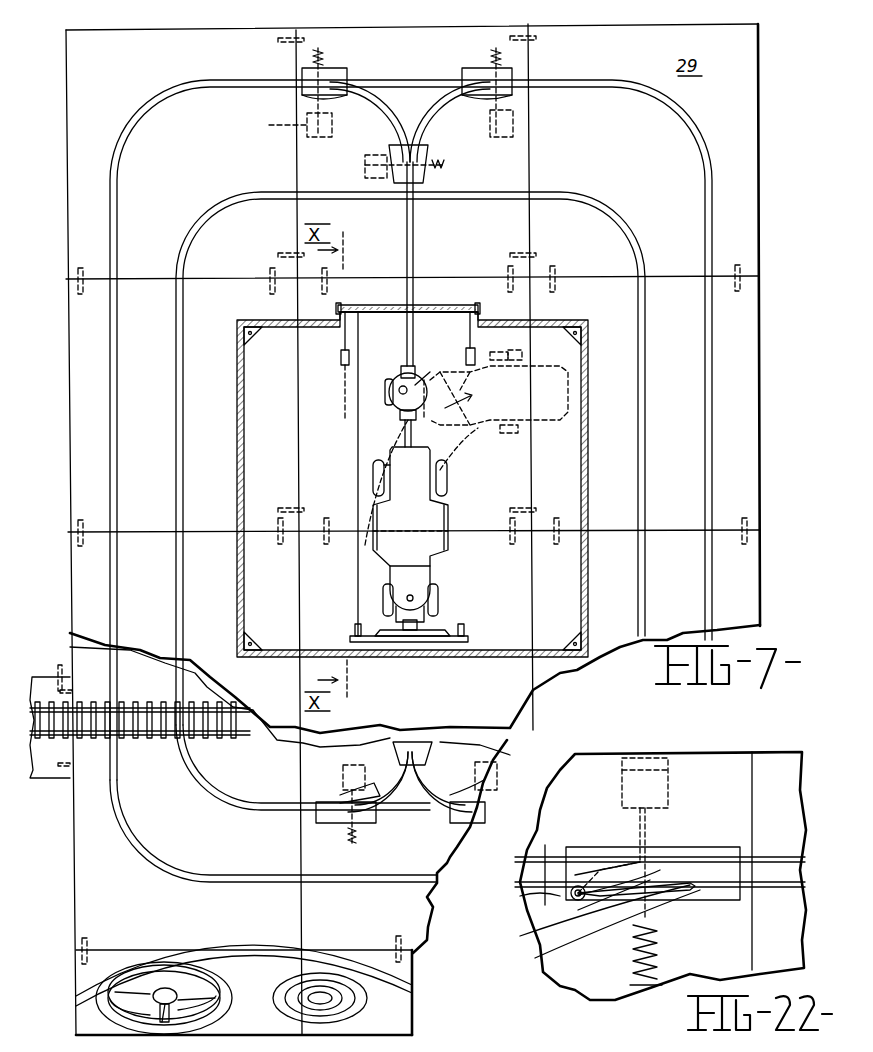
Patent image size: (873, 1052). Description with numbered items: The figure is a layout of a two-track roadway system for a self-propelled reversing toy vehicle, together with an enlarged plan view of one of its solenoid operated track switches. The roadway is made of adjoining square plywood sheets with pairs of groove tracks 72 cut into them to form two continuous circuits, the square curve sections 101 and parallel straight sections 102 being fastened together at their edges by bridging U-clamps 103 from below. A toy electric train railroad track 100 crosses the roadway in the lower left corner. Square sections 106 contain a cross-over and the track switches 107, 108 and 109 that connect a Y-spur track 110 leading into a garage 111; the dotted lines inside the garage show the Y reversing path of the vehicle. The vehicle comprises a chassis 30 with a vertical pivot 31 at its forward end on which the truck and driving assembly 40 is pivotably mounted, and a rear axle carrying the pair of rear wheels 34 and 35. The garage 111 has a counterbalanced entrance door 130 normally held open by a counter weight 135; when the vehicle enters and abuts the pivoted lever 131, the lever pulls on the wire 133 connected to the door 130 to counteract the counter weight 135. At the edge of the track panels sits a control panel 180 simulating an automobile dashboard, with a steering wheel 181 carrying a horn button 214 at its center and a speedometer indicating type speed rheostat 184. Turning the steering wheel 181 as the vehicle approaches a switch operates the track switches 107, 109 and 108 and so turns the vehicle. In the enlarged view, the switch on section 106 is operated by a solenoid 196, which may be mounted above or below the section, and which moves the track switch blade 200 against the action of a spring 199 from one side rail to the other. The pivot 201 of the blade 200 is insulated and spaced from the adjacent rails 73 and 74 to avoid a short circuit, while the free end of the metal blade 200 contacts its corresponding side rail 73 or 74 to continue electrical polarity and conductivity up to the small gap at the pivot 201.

In FIG. 7, the chassis 30 is at (452, 516).
In FIG. 7, the vertical pivot 31 is at (410, 592).
In FIG. 7, the rear wheel 34 is at (372, 468).
In FIG. 7, the rear wheel 35 is at (447, 472).
In FIG. 7, the truck and driving assembly 40 is at (418, 375).
In FIG. 7, the groove tracks 72 is at (690, 128).
In FIG. 22, the side rail 73 is at (784, 835).
In FIG. 22, the side rail 74 is at (520, 895).
In FIG. 7, the railroad track 100 is at (158, 738).
In FIG. 7, the curve section 101 is at (72, 130).
In FIG. 7, the straight section 102 is at (74, 376).
In FIG. 7, the bridging U-clamp 103 is at (742, 268).
In FIG. 7, the cross-over and switch section 106 is at (450, 30).
In FIG. 22, the cross-over and switch section 106 is at (730, 830).
In FIG. 7, the track switch 107 is at (330, 95).
In FIG. 7, the track switch 108 is at (430, 152).
In FIG. 7, the track switch 109 is at (480, 95).
In FIG. 7, the Y-spur track 110 is at (414, 238).
In FIG. 7, the garage 111 is at (589, 388).
In FIG. 7, the entrance door 130 is at (425, 305).
In FIG. 7, the lever 131 is at (450, 636).
In FIG. 7, the wire 133 is at (356, 436).
In FIG. 7, the counter weight 135 is at (340, 362).
In FIG. 7, the control panel 180 is at (418, 992).
In FIG. 7, the steering wheel 181 is at (208, 975).
In FIG. 7, the speed rheostat 184 is at (345, 968).
In FIG. 7, the solenoid 196 is at (538, 128).
In FIG. 22, the solenoid 196 is at (668, 782).
In FIG. 22, the spring 199 is at (660, 960).
In FIG. 22, the track switch blade 200 is at (660, 860).
In FIG. 22, the pivot 201 is at (580, 848).
In FIG. 7, the horn button 214 is at (168, 992).